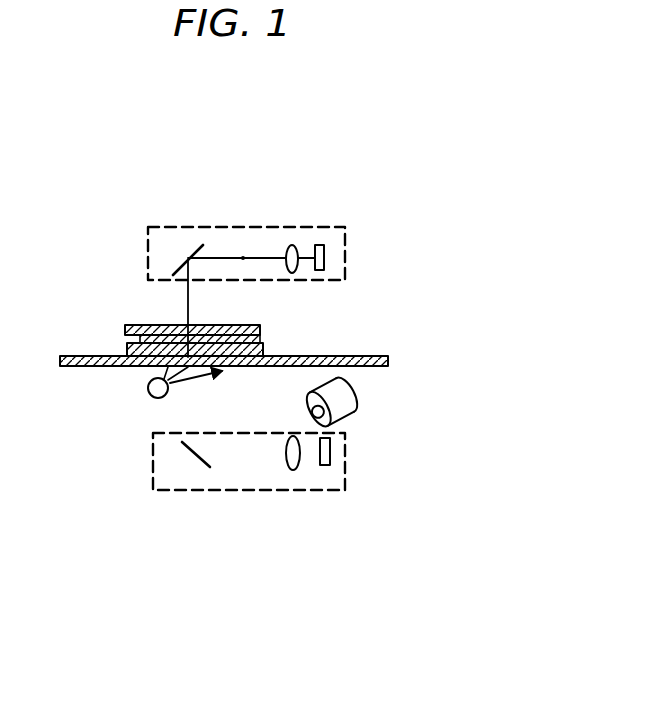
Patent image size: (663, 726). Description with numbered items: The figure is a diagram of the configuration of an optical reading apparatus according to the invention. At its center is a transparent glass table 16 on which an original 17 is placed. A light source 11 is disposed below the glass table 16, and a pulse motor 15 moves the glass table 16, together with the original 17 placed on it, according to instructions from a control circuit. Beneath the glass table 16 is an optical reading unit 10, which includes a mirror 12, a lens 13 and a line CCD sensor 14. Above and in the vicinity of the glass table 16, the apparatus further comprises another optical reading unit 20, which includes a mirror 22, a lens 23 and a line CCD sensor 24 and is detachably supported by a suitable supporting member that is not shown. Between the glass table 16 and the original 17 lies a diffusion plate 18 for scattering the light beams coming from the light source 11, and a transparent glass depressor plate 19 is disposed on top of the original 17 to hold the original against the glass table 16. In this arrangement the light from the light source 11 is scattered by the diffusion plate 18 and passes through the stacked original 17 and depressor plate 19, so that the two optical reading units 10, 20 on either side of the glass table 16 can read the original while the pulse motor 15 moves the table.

The optical reading unit 10 is at (328, 490).
The light source 11 is at (148, 394).
The mirror 12 is at (188, 453).
The lens 13 is at (295, 470).
The line CCD sensor 14 is at (332, 453).
The pulse motor 15 is at (357, 408).
The glass table 16 is at (388, 355).
The original 17 is at (125, 325).
The diffusion plate 18 is at (262, 348).
The glass depressor plate 19 is at (258, 323).
The optical reading unit 20 is at (218, 226).
The mirror 22 is at (186, 257).
The lens 23 is at (295, 244).
The line CCD sensor 24 is at (333, 253).